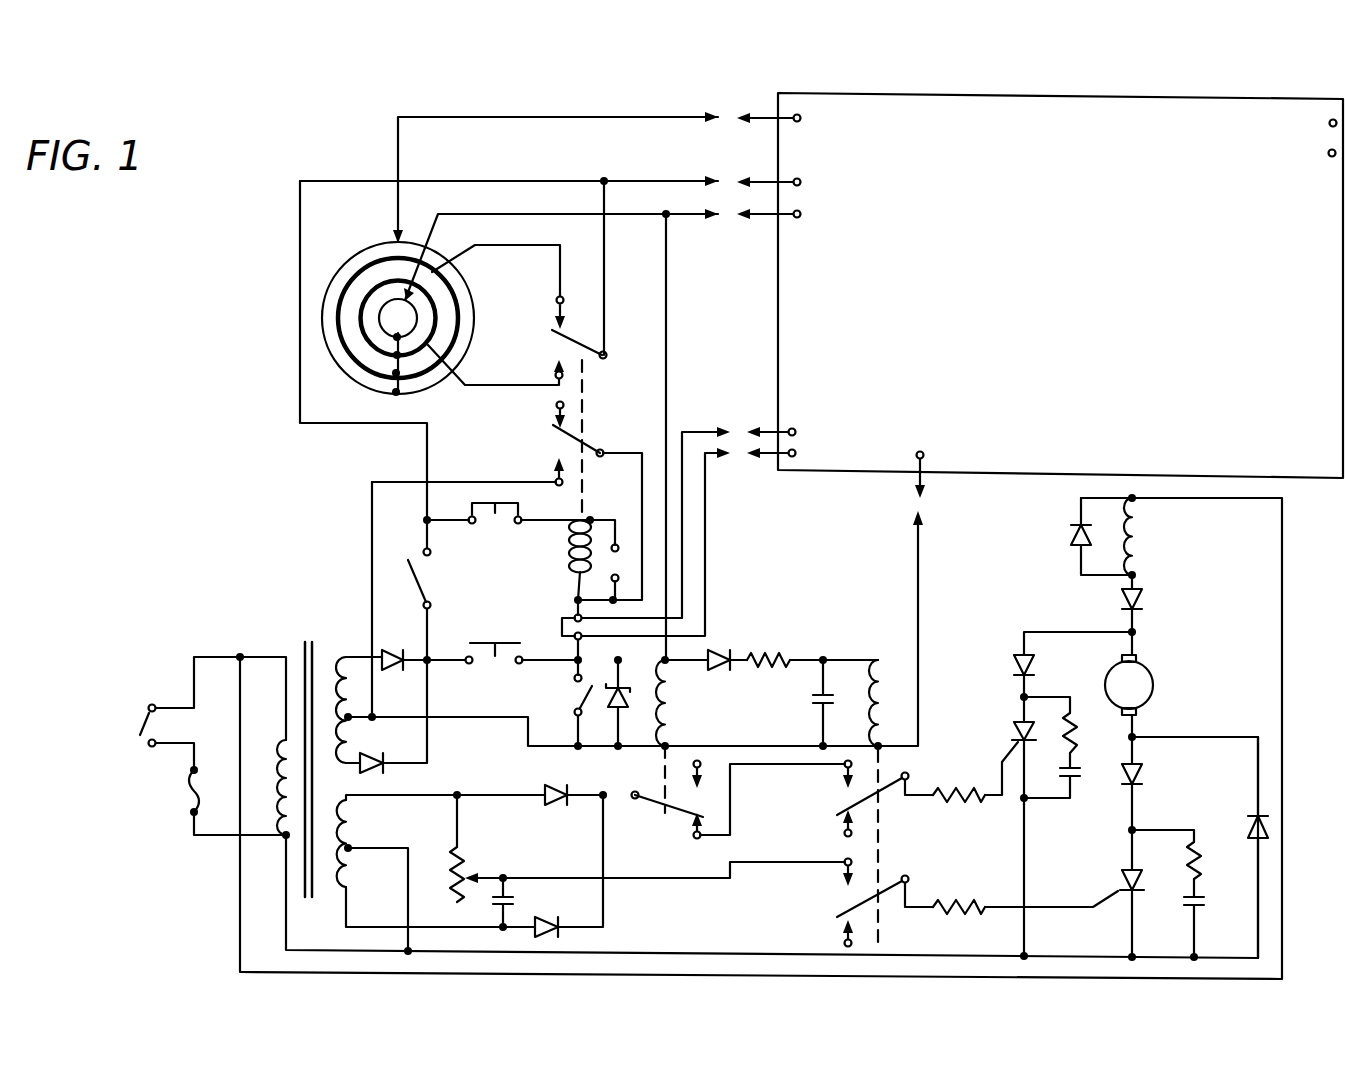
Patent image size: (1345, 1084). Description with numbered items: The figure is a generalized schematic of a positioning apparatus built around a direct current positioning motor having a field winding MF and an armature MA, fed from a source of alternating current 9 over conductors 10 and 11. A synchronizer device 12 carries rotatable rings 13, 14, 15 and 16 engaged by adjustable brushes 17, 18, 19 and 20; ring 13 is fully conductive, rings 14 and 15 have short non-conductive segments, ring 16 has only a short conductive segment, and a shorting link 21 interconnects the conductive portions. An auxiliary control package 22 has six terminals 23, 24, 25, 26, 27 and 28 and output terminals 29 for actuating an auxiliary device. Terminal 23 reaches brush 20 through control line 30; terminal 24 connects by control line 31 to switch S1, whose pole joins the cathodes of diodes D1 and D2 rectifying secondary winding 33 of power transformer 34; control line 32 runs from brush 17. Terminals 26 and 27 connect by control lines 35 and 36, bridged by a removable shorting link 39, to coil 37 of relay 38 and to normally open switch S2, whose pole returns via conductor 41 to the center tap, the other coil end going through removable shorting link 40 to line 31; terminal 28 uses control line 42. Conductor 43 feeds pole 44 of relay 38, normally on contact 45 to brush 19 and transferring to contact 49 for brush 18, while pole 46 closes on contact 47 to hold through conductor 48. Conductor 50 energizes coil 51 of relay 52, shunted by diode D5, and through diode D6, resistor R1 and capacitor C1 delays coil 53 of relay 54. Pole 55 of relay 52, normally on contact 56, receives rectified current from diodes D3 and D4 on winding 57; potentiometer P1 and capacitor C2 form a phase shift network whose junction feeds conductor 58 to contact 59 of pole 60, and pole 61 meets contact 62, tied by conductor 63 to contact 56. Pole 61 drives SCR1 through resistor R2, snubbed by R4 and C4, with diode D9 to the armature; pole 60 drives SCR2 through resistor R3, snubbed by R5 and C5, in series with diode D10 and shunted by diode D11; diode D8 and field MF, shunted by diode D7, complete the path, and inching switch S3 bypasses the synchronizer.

The source of alternating current 9 is at (202, 713).
The electrical conductor 10 is at (286, 928).
The electrical conductor 11 is at (240, 928).
The synchronizer device 12 is at (357, 252).
The innermost synchronizer ring 13 is at (383, 331).
The synchronizer ring 14 is at (378, 285).
The synchronizer ring 15 is at (382, 340).
The synchronizer ring 16 is at (436, 385).
The brush 17 is at (435, 297).
The brush 18 is at (430, 345).
The brush 19 is at (443, 275).
The brush 20 is at (398, 228).
The shorting link 21 is at (400, 392).
The auxiliary control package 22 is at (1078, 225).
The terminal 23 is at (800, 116).
The terminal 24 is at (800, 180).
The terminal 25 is at (800, 212).
The terminal 26 is at (795, 430).
The terminal 27 is at (795, 451).
The terminal 28 is at (923, 452).
The terminals 29 is at (1329, 151).
The control line 30 is at (600, 120).
The control line 31 is at (508, 170).
The control line 32 is at (560, 212).
The secondary winding 33 is at (335, 658).
The power transformer 34 is at (302, 650).
The control line 35 is at (725, 405).
The control line 36 is at (705, 517).
The relay coil 37 is at (570, 562).
The relay 38 is at (585, 492).
The removable shorting link 39 is at (562, 618).
The removable shorting link 40 is at (506, 528).
The conductor 41 is at (455, 722).
The control line 42 is at (915, 588).
The conductor 43 is at (606, 270).
The relay pole 44 is at (578, 328).
The relay contact 45 is at (557, 302).
The relay pole 46 is at (588, 436).
The relay contact 47 is at (556, 462).
The conductor 48 is at (372, 556).
The relay contact 49 is at (556, 370).
The conductor 50 is at (672, 282).
The relay coil 51 is at (675, 714).
The relay 52 is at (662, 770).
The relay coil 53 is at (872, 712).
The relay 54 is at (885, 832).
The relay pole 55 is at (672, 805).
The relay contact 56 is at (702, 838).
The transformer winding 57 is at (355, 822).
The conductor 58 is at (637, 870).
The relay contact 59 is at (835, 870).
The relay pole 60 is at (840, 920).
The relay pole 61 is at (835, 808).
The relay contact 62 is at (850, 772).
The conductor 63 is at (732, 772).
The switch S1 is at (433, 592).
The normally open switch S2 is at (566, 703).
The inching switch S3 is at (500, 642).
The rectifier diode D1 is at (401, 675).
The rectifier diode D2 is at (393, 716).
The diode D3 is at (530, 811).
The diode D4 is at (555, 864).
The diode D5 is at (606, 703).
The diode D6 is at (706, 676).
The diode D7 is at (1076, 536).
The diode D8 is at (1153, 605).
The diode D9 is at (1050, 666).
The diode D10 is at (1157, 785).
The diode D11 is at (1200, 847).
The resistor R1 is at (812, 677).
The current limiting resistor R2 is at (961, 772).
The current limiting resistor R3 is at (1011, 893).
The resistor R4 is at (1067, 725).
The resistor R5 is at (1184, 854).
The capacitor C1 is at (802, 703).
The capacitor C2 is at (484, 902).
The capacitor C4 is at (1052, 775).
The capacitor C5 is at (1171, 920).
The potentiometer P1 is at (477, 846).
The motor armature MA is at (1148, 686).
The motor field winding MF is at (1151, 536).
The silicon controlled rectifier SCR1 is at (980, 828).
The silicon controlled rectifier SCR2 is at (1087, 895).